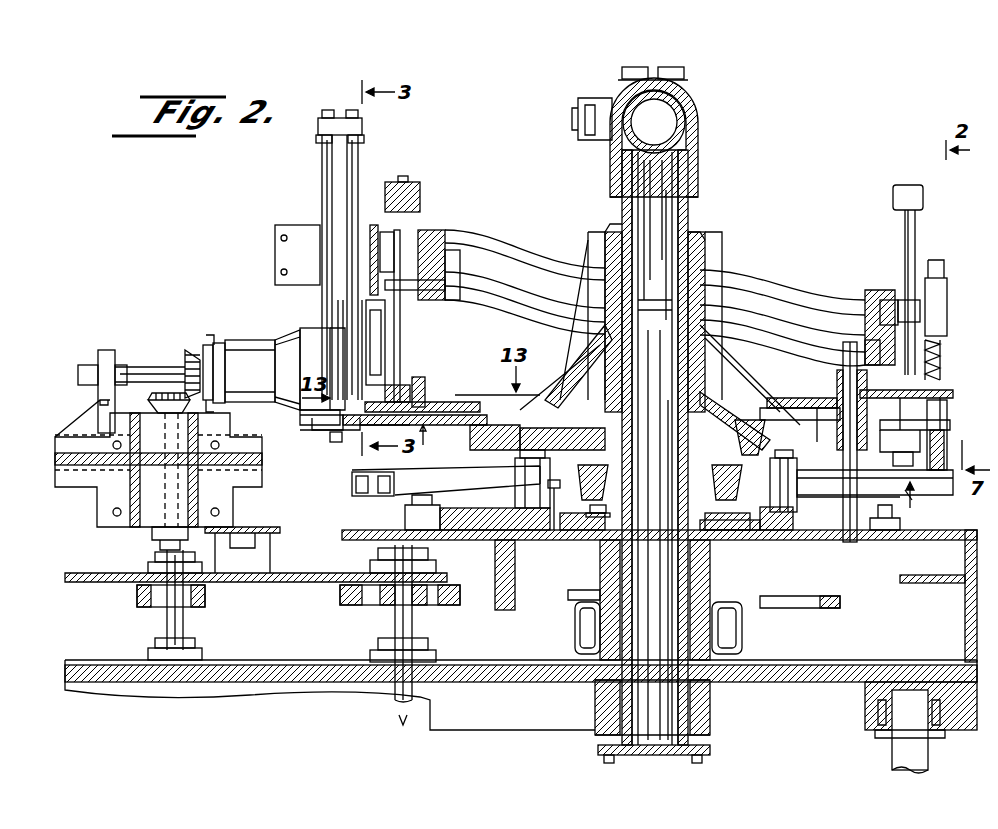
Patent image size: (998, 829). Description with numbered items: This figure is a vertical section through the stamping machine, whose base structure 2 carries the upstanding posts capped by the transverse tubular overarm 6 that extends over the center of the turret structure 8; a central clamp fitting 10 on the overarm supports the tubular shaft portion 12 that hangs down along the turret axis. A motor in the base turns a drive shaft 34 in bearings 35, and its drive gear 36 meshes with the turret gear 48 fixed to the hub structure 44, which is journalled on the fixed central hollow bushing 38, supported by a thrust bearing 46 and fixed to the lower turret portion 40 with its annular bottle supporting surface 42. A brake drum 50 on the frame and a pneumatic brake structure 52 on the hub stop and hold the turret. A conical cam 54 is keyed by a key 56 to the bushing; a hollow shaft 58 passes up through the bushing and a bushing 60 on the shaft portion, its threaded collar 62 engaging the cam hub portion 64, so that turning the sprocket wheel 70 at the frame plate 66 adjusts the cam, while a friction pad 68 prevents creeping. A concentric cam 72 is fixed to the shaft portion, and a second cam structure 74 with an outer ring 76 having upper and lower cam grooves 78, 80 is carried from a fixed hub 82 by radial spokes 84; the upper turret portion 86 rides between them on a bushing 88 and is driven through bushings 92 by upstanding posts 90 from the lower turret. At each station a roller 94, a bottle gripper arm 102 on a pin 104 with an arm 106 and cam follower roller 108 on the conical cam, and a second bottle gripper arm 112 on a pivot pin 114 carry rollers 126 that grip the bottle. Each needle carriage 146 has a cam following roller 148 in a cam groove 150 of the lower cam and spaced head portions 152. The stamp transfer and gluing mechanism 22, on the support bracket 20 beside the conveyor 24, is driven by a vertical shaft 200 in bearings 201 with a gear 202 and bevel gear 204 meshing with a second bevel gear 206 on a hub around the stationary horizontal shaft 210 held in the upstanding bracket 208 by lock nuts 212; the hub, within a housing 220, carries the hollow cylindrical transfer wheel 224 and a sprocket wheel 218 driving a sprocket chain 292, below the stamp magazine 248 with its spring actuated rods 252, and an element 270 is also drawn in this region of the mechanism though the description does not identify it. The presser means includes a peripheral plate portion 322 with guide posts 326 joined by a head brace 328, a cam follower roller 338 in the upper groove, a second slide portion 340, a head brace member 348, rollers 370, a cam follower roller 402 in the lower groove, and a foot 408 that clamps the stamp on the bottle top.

The base structure 2 is at (866, 690).
The transverse tubular overarm 6 is at (690, 102).
The turret structure 8 is at (341, 518).
The central clamp fitting 10 is at (684, 72).
The tubular shaft portion 12 is at (690, 212).
The support bracket 20 is at (97, 495).
The stamp transfer and gluing mechanism 22 is at (276, 301).
The conveyor 24 is at (268, 527).
The drive shaft 34 is at (395, 690).
The bearings 35 is at (428, 556).
The drive gear 36 is at (455, 605).
The central hollow bushing 38 is at (598, 690).
The lower turret portion 40 is at (590, 540).
The annular bottle supporting surface 42 is at (375, 528).
The hub structure 44 is at (600, 580).
The thrust bearing 46 is at (575, 632).
The turret gear 48 is at (840, 602).
The brake drum 50 is at (568, 622).
The pneumatic brake structure 52 is at (742, 628).
The conical cam 54 is at (592, 513).
The key 56 is at (618, 520).
The hollow shaft 58 is at (648, 265).
The bushing 60 is at (740, 395).
The threaded collar 62 is at (742, 430).
The hub portion 64 is at (612, 440).
The frame plate 66 is at (684, 755).
The friction pad 68 is at (628, 755).
The sprocket wheel 70 is at (598, 748).
The concentric cam 72 is at (470, 455).
The second cam structure 74 is at (800, 295).
The outer ring 76 is at (410, 225).
The upper cam groove 78 is at (882, 298).
The lower cam groove 80 is at (425, 290).
The fixed hub 82 is at (700, 285).
The radial spokes 84 is at (770, 300).
The upper turret portion 86 is at (778, 348).
The bushing 88 is at (590, 336).
The upstanding posts 90 is at (843, 375).
The bushings 92 is at (840, 478).
The roller 94 is at (368, 540).
The bottle gripper arm 102 is at (470, 490).
The pin 104 is at (515, 485).
The arm 106 is at (554, 520).
The cam follower roller 108 is at (722, 505).
The second bottle gripper arm 112 is at (922, 508).
The pivot pin 114 is at (770, 505).
The rollers 126 is at (360, 472).
The needle carriage 146 is at (423, 445).
The cam following roller 148 is at (470, 430).
The cam groove 150 is at (520, 418).
The head portions 152 is at (336, 442).
The vertical shaft 200 is at (167, 625).
The bearings 201 is at (155, 560).
The gear 202 is at (137, 595).
The bevel gear 204 is at (118, 398).
The second bevel gear 206 is at (192, 350).
The upstanding bracket 208 is at (106, 350).
The stationary horizontal shaft 210 is at (160, 367).
The lock nuts 212 is at (85, 365).
The sprocket wheel 218 is at (260, 360).
The housing 220 is at (222, 343).
The hollow cylindrical transfer wheel 224 is at (285, 338).
The stamp magazine 248 is at (362, 150).
The spring actuated rods 252 is at (345, 178).
The block 270 is at (315, 340).
The sprocket chain 292 is at (210, 335).
The peripheral plate portion 322 is at (950, 392).
The guide posts 326 is at (905, 230).
The head brace 328 is at (420, 195).
The cam follower roller 338 is at (440, 230).
The second slide portion 340 is at (370, 248).
The head brace member 348 is at (374, 225).
The roller 370 is at (385, 375).
The cam follower roller 402 is at (455, 300).
The foot 408 is at (410, 385).